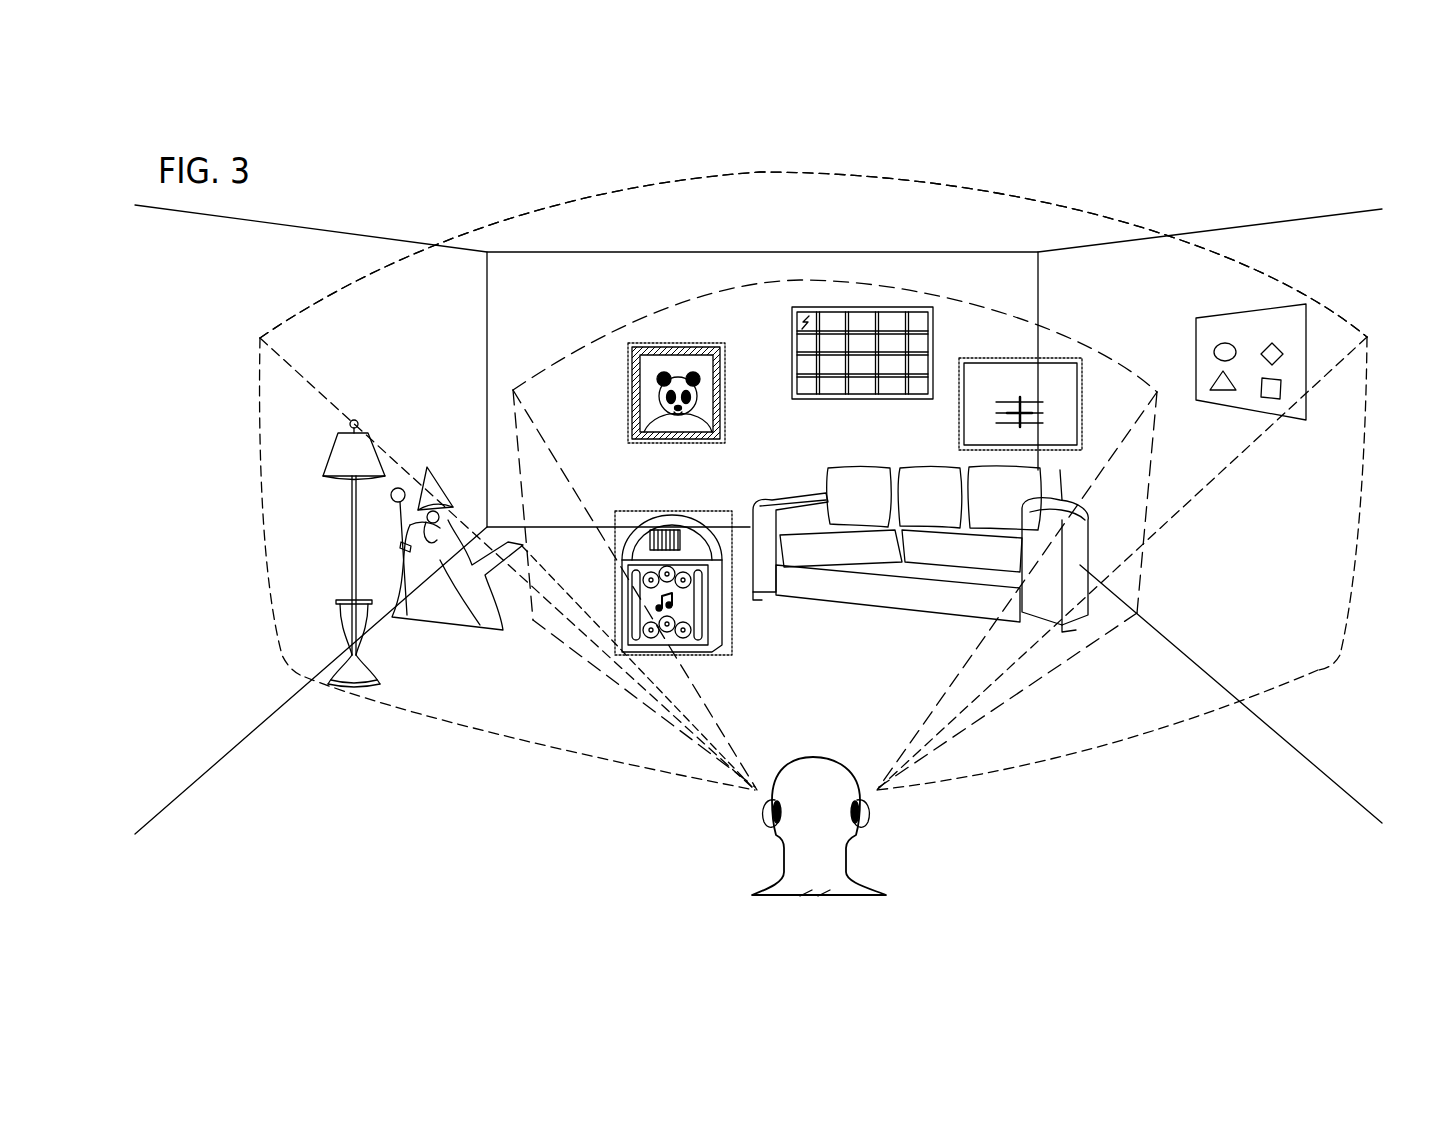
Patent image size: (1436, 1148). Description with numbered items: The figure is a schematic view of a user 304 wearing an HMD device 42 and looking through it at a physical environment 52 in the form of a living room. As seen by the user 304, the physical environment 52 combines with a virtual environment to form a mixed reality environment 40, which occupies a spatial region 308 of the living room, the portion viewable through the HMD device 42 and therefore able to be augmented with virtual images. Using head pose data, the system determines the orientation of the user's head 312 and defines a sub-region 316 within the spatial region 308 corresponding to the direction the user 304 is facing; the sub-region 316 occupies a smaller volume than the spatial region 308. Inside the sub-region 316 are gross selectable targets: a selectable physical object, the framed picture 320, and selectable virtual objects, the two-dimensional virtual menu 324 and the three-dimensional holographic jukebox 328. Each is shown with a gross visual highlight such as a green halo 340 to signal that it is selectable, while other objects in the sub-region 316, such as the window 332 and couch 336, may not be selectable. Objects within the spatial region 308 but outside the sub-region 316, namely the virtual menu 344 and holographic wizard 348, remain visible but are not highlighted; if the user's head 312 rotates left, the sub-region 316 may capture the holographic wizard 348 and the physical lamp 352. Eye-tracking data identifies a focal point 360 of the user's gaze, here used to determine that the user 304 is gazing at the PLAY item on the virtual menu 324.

The mixed reality environment 40 is at (971, 205).
The HMD device 42 is at (858, 822).
The physical environment 52 is at (454, 369).
The user 304 is at (798, 809).
The spatial region 308 is at (340, 284).
The user's head 312 is at (833, 757).
The sub-region 316 is at (625, 323).
The framed picture 320 is at (632, 397).
The virtual menu 324 is at (962, 432).
The holographic jukebox 328 is at (698, 650).
The window 332 is at (872, 306).
The couch 336 is at (800, 495).
The green halo 340 is at (680, 347).
The virtual menu 344 is at (1220, 316).
The holographic wizard 348 is at (440, 625).
The physical lamp 352 is at (330, 452).
The focal point 360 is at (1022, 411).